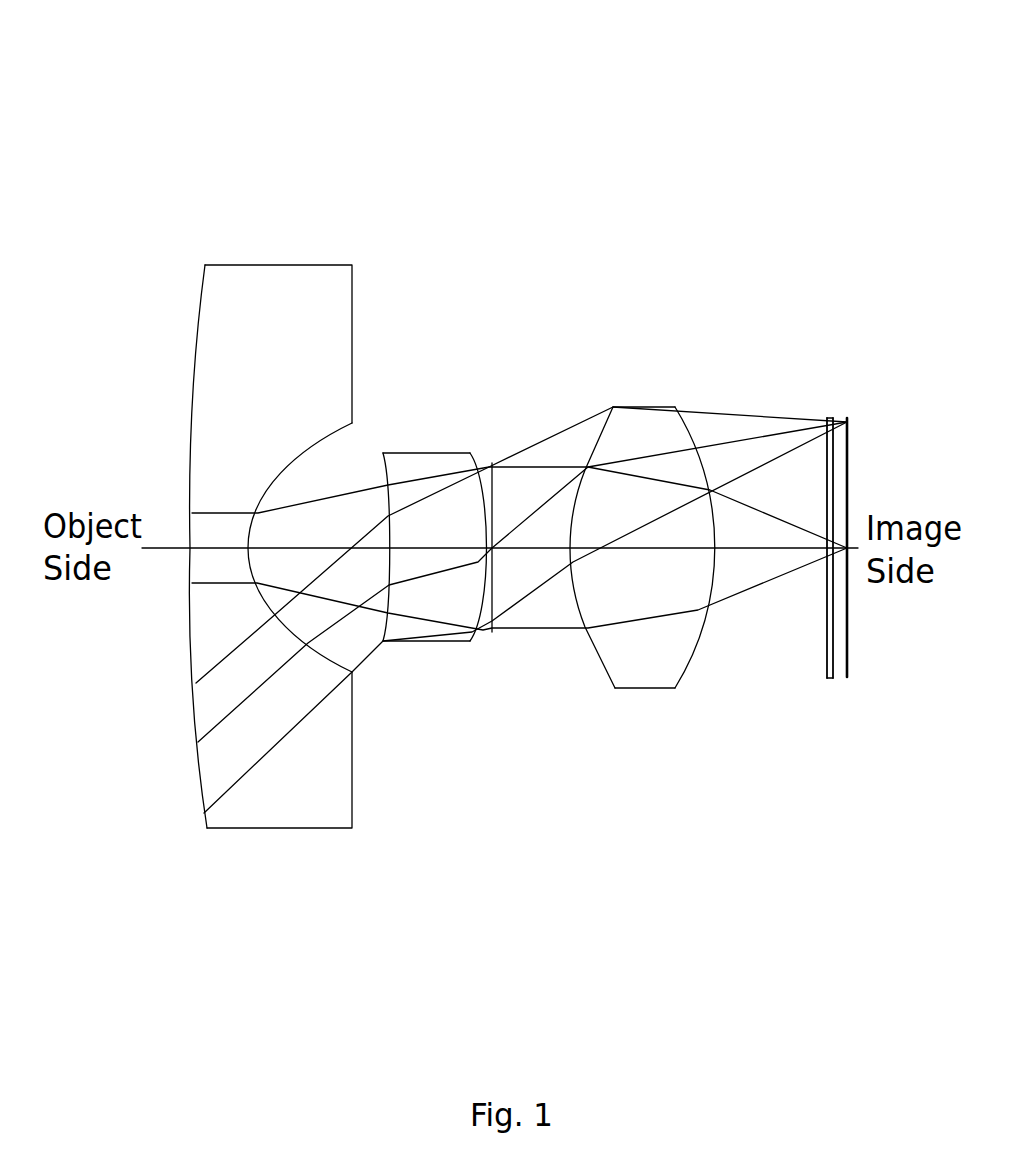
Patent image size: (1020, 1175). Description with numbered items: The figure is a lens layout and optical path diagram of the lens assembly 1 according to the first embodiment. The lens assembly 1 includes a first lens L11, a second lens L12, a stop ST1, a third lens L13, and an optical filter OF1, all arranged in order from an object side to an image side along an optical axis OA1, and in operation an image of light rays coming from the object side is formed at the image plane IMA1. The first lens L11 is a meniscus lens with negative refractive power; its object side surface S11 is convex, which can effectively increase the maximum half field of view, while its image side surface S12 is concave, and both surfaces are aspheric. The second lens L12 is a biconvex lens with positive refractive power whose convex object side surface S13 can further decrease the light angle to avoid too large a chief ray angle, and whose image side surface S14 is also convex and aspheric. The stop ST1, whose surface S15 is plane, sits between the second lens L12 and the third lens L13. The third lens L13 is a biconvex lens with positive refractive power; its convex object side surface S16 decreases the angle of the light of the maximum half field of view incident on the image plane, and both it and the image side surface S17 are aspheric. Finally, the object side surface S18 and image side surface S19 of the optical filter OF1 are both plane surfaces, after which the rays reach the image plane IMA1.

The lens assembly 1 is at (98, 41).
The first lens L11 is at (230, 536).
The second lens L12 is at (439, 532).
The third lens L13 is at (642, 498).
The stop ST1 is at (531, 481).
The optical filter OF1 is at (811, 512).
The image plane IMA1 is at (847, 422).
The optical axis OA1 is at (160, 548).
The object side surface of the first lens S11 is at (192, 648).
The image side surface of the first lens S12 is at (292, 633).
The object side surface of the second lens S13 is at (392, 572).
The image side surface of the second lens S14 is at (470, 603).
The stop surface S15 is at (492, 628).
The object side surface of the third lens S16 is at (597, 653).
The image side surface of the third lens S17 is at (697, 637).
The object side surface of the optical filter S18 is at (823, 605).
The image side surface of the optical filter S19 is at (835, 643).